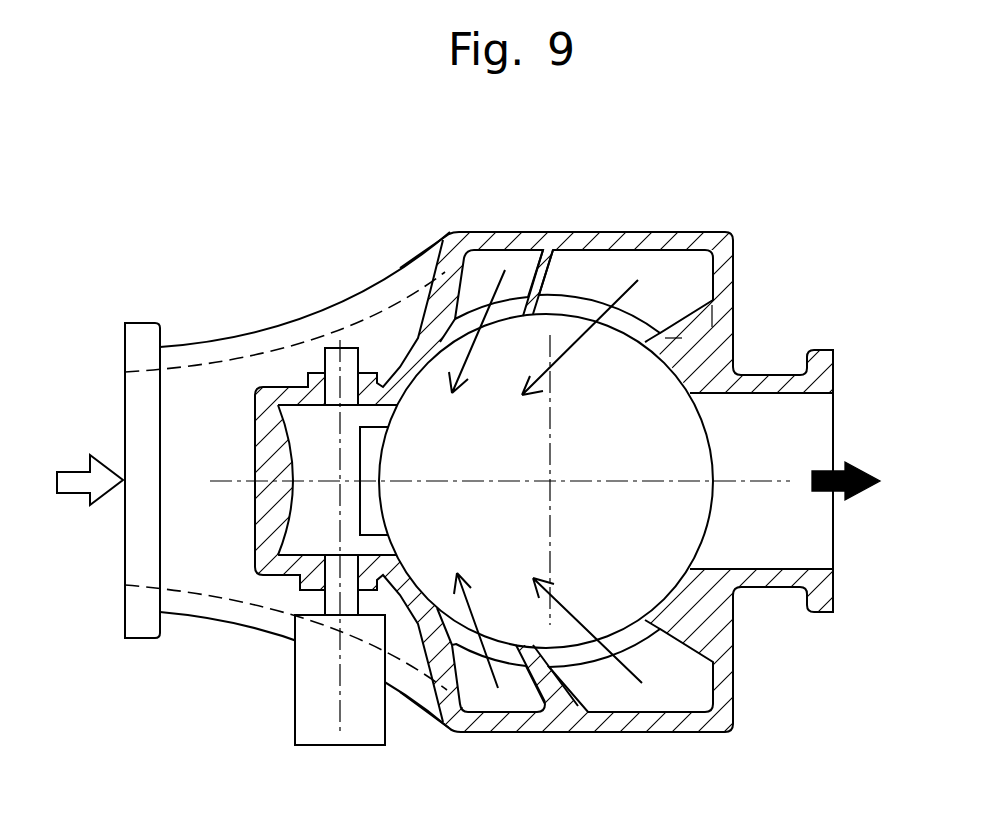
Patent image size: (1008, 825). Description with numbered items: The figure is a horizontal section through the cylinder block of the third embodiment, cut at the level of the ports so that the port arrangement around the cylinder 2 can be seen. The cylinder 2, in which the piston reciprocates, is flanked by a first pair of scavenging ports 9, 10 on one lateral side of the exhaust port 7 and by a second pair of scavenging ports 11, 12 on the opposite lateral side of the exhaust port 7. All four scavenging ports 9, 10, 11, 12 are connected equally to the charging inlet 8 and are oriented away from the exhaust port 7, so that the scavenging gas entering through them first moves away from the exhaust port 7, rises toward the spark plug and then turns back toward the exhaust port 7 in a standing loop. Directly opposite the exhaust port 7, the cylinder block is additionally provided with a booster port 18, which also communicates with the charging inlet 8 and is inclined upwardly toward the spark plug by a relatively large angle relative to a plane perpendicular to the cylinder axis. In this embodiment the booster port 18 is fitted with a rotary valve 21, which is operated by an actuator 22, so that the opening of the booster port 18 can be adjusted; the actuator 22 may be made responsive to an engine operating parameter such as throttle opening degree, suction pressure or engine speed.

The cylinder 2 is at (688, 546).
The exhaust port 7 is at (765, 422).
The charging inlet 8 is at (203, 548).
The scavenging port 9 is at (587, 657).
The scavenging port 10 is at (445, 730).
The scavenging port 11 is at (630, 233).
The scavenging port 12 is at (490, 233).
The booster port 18 is at (405, 385).
The rotary valve 21 is at (297, 423).
The actuator 22 is at (325, 735).